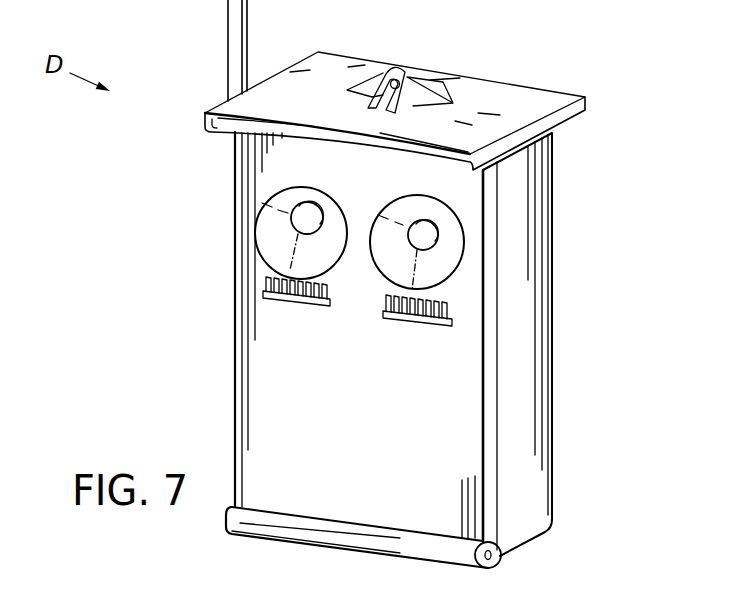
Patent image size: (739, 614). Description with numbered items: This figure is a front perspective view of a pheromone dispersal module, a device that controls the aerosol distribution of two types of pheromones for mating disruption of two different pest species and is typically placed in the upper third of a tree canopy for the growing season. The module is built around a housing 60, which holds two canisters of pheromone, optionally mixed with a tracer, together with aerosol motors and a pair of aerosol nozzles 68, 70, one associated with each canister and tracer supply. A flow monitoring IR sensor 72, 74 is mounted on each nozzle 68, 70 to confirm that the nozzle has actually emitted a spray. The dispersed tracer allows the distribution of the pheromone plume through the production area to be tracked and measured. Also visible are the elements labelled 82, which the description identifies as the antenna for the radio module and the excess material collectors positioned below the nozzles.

The housing 60 is at (515, 482).
The aerosol nozzle 68 is at (298, 204).
The aerosol nozzle 70 is at (463, 248).
The flow monitoring IR sensor 72 is at (275, 228).
The flow monitoring IR sensor 74 is at (447, 267).
The antenna / excess material collectors 82 is at (228, 30).